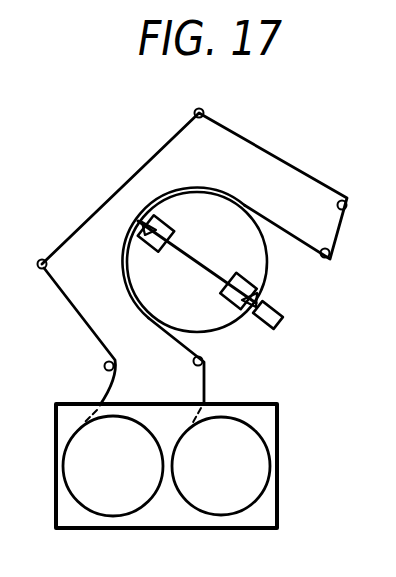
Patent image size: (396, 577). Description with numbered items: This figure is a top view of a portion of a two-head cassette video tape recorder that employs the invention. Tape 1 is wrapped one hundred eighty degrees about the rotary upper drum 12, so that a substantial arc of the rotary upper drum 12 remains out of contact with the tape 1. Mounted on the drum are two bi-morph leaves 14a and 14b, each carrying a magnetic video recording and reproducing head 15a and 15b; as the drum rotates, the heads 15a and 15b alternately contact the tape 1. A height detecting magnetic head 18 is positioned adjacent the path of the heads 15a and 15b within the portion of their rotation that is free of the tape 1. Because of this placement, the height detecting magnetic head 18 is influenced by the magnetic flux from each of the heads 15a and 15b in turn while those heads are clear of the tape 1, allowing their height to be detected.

The tape 1 is at (75, 317).
The rotary upper drum 12 is at (243, 218).
The bi-morph leaf 14a is at (226, 310).
The bi-morph leaf 14b is at (152, 217).
The magnetic video recording and reproducing head 15a is at (257, 297).
The magnetic video recording and reproducing head 15b is at (142, 227).
The height detecting magnetic head 18 is at (280, 330).